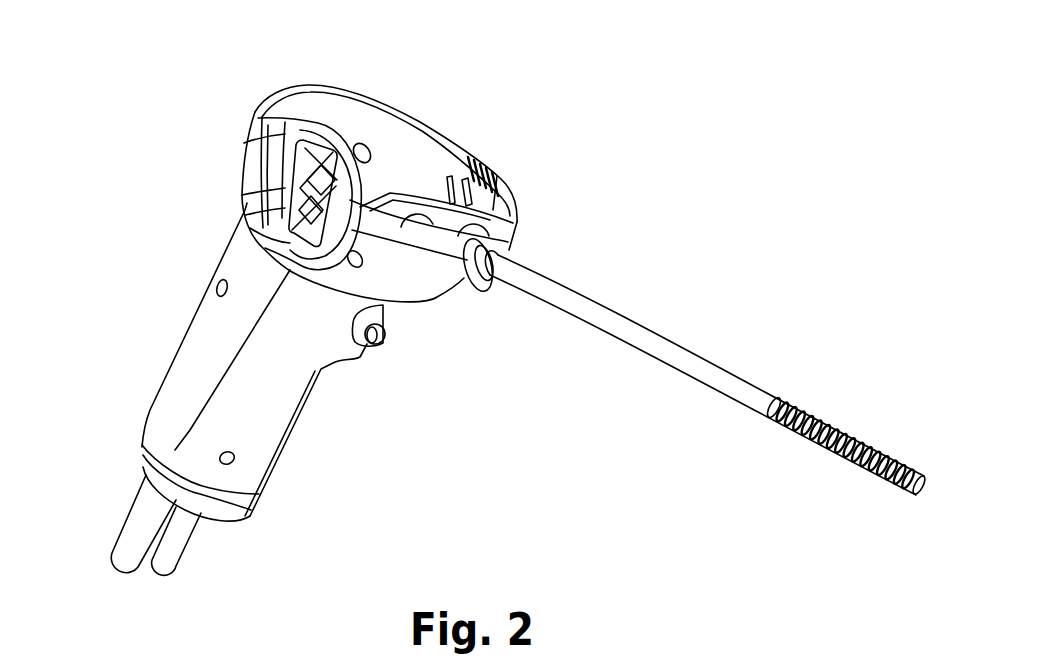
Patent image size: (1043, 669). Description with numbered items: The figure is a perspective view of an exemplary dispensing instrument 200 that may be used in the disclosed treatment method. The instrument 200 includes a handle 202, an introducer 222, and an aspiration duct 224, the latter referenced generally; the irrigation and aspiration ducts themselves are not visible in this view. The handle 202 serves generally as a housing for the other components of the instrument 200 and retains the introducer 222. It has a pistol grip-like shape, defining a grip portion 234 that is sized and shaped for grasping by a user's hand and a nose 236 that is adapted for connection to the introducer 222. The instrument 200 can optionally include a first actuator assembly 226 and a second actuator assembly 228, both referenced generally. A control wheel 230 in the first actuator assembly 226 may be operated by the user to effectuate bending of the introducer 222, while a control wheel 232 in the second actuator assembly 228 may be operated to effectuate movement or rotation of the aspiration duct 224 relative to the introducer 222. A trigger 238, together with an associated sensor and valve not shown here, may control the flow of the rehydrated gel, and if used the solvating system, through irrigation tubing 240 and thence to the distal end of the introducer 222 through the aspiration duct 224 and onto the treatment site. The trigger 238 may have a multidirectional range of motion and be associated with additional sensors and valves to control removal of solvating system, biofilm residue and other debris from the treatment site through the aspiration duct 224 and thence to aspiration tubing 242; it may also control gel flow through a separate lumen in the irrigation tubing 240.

The instrument 200 is at (166, 52).
The handle 202 is at (163, 352).
The introducer 222 is at (690, 306).
The aspiration duct 224 is at (932, 484).
The first actuator assembly 226 is at (519, 201).
The second actuator assembly 228 is at (325, 138).
The control wheel 230 is at (443, 230).
The control wheel 232 is at (297, 216).
The grip portion 234 is at (260, 414).
The nose 236 is at (484, 279).
The trigger 238 is at (381, 338).
The irrigation tubing 240 is at (123, 549).
The aspiration tubing 242 is at (170, 547).